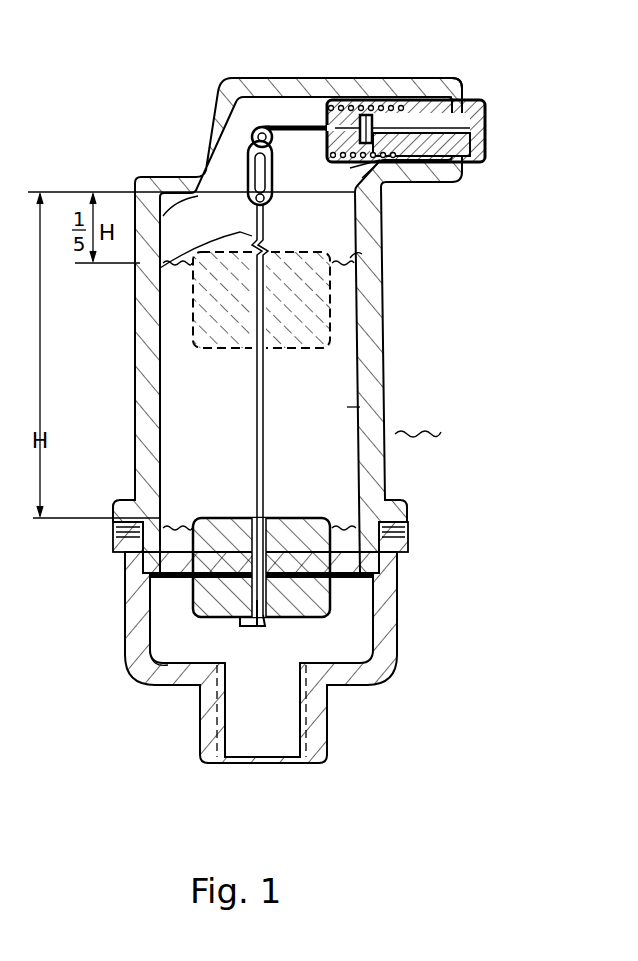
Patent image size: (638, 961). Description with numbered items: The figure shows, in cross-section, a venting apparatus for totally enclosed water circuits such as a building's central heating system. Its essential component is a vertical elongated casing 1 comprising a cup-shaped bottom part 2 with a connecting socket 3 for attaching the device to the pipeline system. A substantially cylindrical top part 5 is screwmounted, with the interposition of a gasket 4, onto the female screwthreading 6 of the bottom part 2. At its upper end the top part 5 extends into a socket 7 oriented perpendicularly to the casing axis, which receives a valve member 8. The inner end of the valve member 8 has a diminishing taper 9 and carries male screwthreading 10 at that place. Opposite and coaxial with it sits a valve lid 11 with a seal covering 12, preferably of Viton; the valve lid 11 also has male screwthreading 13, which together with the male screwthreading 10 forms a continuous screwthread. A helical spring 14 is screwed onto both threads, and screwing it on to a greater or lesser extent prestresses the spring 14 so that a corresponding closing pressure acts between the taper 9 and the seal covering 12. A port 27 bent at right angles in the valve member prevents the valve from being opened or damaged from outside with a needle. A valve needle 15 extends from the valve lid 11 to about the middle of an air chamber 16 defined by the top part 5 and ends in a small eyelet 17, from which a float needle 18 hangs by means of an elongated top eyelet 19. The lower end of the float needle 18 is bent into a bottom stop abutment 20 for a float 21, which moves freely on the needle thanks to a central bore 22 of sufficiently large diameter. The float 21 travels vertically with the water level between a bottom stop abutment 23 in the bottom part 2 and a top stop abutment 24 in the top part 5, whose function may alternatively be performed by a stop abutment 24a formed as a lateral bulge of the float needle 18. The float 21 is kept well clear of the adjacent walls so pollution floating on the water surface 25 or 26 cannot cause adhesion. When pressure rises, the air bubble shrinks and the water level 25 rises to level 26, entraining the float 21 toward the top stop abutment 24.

The casing 1 is at (441, 432).
The bottom part 2 is at (397, 627).
The connecting socket 3 is at (327, 717).
The gasket 4 is at (408, 523).
The top part 5 is at (378, 355).
The female screwthreading 6 is at (397, 563).
The socket 7 is at (440, 84).
The valve member 8 is at (486, 108).
The diminishing taper 9 is at (383, 104).
The male screwthreading 10 is at (398, 95).
The valve lid 11 is at (314, 100).
The seal covering 12 is at (350, 168).
The male screwthreading 13 is at (358, 112).
The helical spring 14 is at (362, 178).
The valve needle 15 is at (287, 124).
The air chamber 16 is at (347, 407).
The eyelet 17 is at (250, 134).
The float needle 18 is at (257, 392).
The top eyelet 19 is at (253, 167).
The bottom stop abutment 20 is at (148, 676).
The float 21 is at (193, 592).
The central bore 22 is at (250, 600).
The bottom stop abutment 23 is at (248, 622).
The top stop abutment 24 is at (137, 280).
The stop abutment 24a is at (137, 316).
The water surface 25 is at (343, 523).
The water surface 26 is at (360, 256).
The port 27 is at (470, 148).